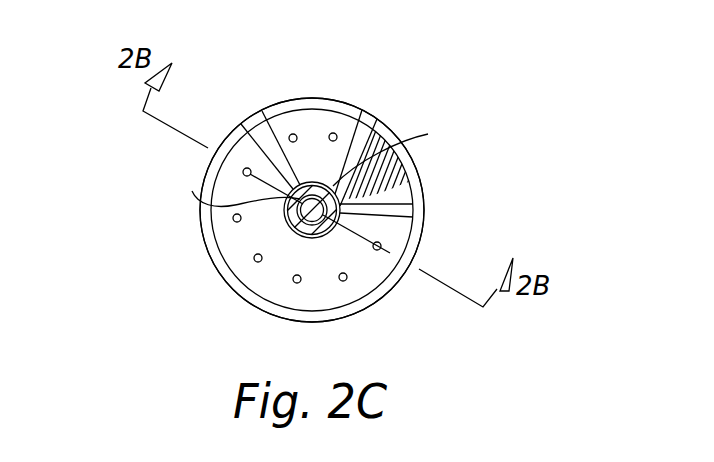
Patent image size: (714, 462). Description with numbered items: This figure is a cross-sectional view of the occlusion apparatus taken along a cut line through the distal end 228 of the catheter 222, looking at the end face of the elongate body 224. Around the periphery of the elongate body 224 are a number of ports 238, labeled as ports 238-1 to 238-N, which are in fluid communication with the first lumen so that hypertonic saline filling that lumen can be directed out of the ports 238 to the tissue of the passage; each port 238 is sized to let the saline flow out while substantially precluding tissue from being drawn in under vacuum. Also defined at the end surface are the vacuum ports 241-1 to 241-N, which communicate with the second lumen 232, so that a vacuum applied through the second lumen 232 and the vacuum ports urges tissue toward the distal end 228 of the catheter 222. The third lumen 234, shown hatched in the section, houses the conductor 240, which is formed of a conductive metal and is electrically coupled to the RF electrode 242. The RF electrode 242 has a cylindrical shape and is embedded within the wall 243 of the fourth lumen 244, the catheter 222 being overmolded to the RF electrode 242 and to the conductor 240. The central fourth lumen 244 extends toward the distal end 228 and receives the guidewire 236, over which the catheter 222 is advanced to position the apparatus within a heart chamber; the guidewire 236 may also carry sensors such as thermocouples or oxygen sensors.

The catheter 222 is at (526, 74).
The elongate body 224 is at (424, 232).
The distal end 228 is at (128, 169).
The second lumen 232 is at (362, 125).
The third lumen 234 is at (397, 179).
The guidewire 236 is at (268, 130).
The ports 238 is at (233, 219).
The port 238-1 is at (243, 172).
The port 238-N is at (384, 245).
The conductor 240 is at (343, 199).
The vacuum port 241-1 is at (294, 134).
The vacuum port 241-N is at (334, 133).
The RF electrode 242 is at (401, 151).
The wall 243 is at (316, 238).
The fourth lumen 244 is at (225, 190).